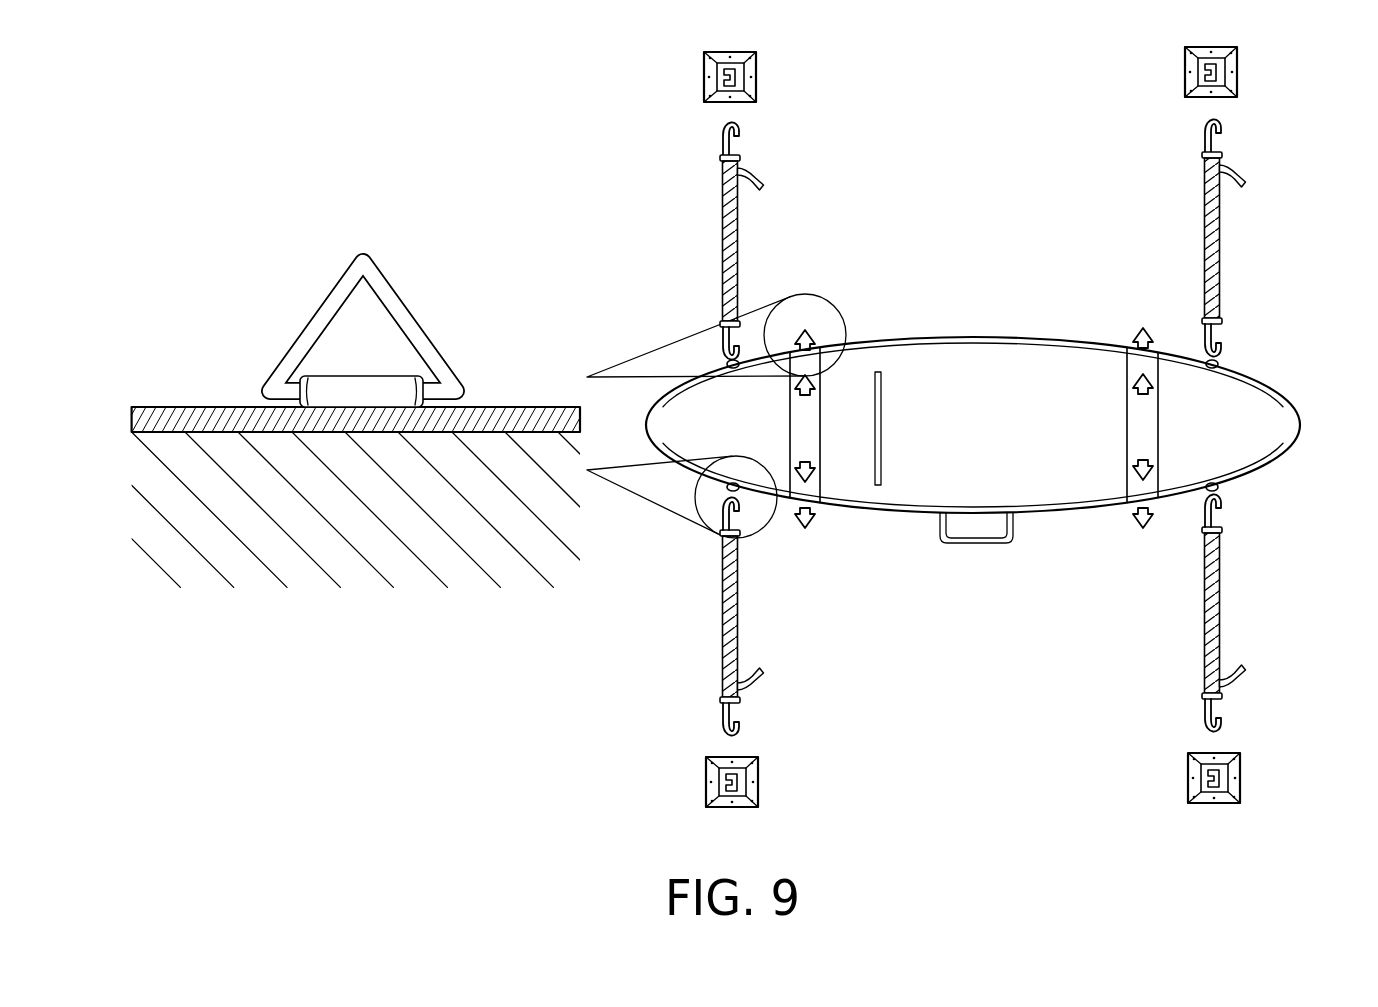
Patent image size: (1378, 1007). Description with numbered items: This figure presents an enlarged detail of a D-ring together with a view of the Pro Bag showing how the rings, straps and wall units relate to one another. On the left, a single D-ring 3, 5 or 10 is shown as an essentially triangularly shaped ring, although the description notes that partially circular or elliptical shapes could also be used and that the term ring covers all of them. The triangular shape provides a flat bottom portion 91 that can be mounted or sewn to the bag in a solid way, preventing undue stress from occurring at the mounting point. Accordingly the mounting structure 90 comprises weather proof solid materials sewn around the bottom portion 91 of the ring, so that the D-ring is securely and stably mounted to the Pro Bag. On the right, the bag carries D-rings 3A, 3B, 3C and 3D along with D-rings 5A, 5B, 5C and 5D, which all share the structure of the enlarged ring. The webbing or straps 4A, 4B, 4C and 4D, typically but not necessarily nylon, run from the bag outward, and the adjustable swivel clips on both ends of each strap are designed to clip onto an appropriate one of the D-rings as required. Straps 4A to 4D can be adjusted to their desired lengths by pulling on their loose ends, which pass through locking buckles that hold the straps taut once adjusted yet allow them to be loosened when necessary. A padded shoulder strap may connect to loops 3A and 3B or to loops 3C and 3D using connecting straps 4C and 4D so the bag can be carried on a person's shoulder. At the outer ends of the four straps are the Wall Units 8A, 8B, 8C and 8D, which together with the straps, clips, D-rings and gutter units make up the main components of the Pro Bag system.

The D-ring 3 is at (430, 326).
The D-ring 5 is at (430, 326).
The D-ring 10 is at (417, 323).
The mounting structure 90 is at (360, 375).
The bottom portion 91 is at (457, 388).
The D-ring 3A is at (812, 338).
The D-ring 3B is at (1137, 330).
The D-ring 3C is at (1137, 520).
The D-ring 3D is at (813, 522).
The strap 4A is at (738, 231).
The strap 4B is at (1220, 228).
The strap 4C is at (1220, 628).
The strap 4D is at (738, 632).
The D-ring 5A is at (722, 360).
The D-ring 5B is at (1228, 362).
The D-ring 5C is at (1228, 490).
The D-ring 5D is at (717, 513).
The Wall Unit 8A is at (756, 75).
The Wall Unit 8B is at (1237, 72).
The Wall Unit 8C is at (1240, 780).
The Wall Unit 8D is at (758, 783).